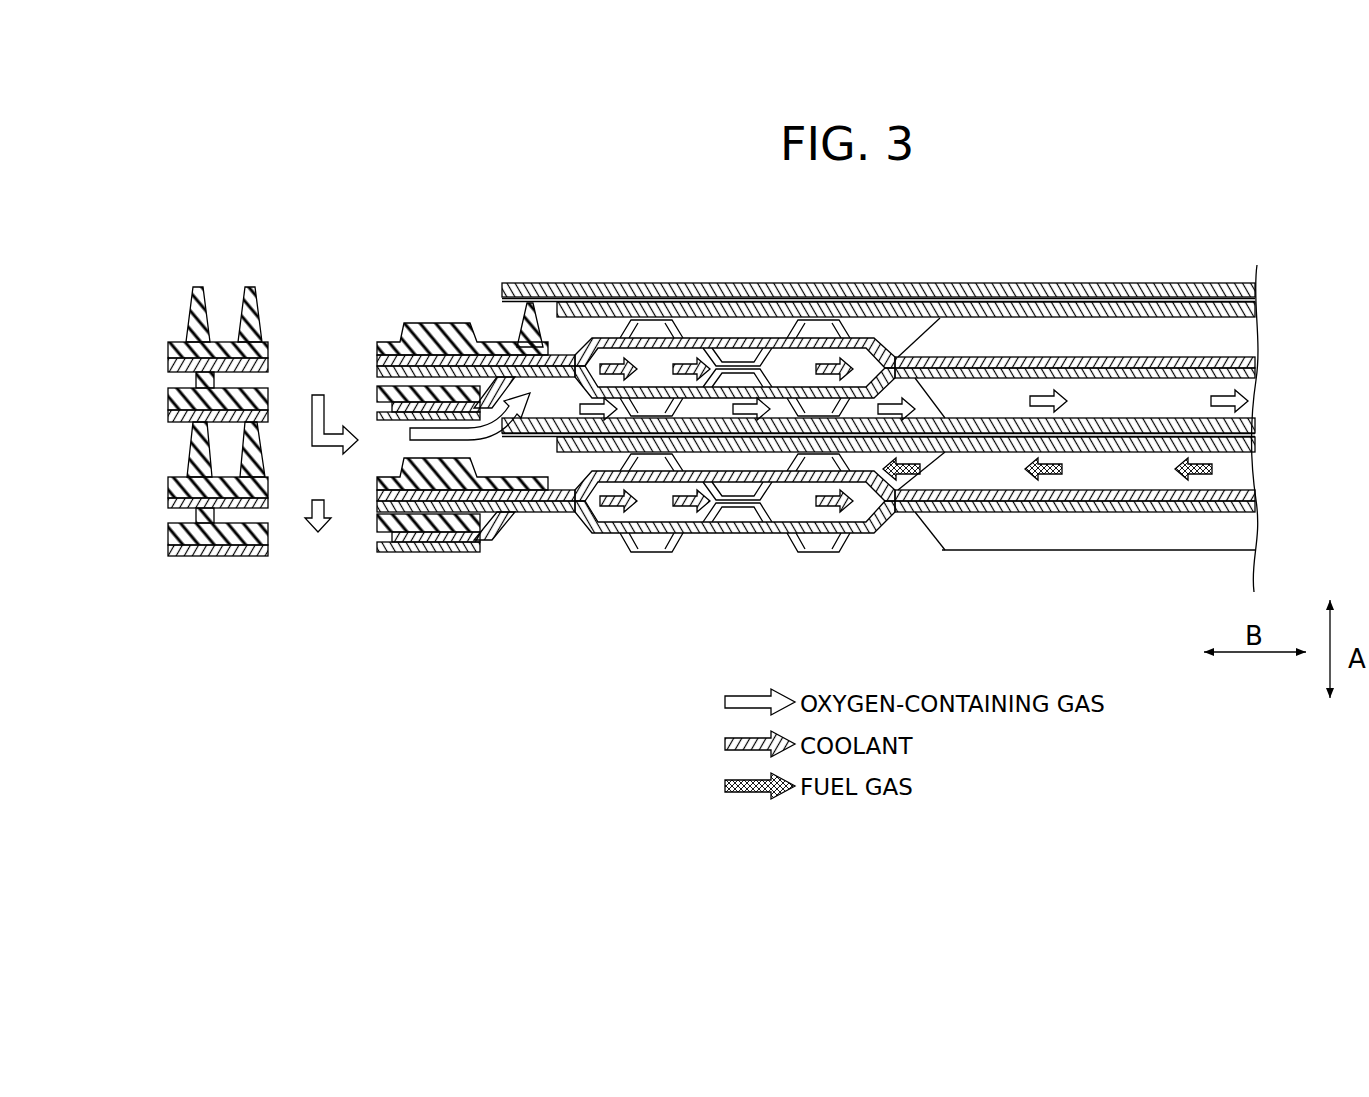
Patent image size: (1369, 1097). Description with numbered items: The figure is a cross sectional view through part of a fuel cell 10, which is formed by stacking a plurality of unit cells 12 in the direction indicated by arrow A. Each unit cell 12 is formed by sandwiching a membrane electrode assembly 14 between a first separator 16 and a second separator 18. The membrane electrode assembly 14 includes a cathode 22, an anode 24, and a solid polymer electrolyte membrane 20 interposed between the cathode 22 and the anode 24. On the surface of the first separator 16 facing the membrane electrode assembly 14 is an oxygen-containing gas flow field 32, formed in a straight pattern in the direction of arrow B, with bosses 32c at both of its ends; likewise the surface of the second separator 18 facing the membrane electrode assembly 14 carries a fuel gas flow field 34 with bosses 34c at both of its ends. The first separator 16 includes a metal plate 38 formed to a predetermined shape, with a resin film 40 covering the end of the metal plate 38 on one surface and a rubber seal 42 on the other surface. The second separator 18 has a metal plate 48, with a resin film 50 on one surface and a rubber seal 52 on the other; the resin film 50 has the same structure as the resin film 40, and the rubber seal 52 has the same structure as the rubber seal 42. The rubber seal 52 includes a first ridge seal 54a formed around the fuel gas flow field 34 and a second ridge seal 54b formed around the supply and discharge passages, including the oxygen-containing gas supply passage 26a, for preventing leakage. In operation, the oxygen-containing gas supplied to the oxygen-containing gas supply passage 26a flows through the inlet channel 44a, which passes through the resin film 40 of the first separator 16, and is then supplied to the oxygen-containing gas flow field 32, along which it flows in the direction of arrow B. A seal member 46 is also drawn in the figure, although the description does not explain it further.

The fuel cell 10 is at (641, 170).
The unit cell 12 is at (860, 234).
The membrane electrode assembly 14 is at (878, 324).
The first separator 16 is at (668, 386).
The second separator 18 is at (782, 468).
The solid polymer electrolyte membrane 20 is at (1168, 434).
The cathode 22 is at (1135, 420).
The anode 24 is at (1202, 448).
The oxygen-containing gas supply passage 26a is at (331, 352).
The oxygen-containing gas flow field 32 is at (997, 395).
The bosses 32c is at (656, 410).
The fuel gas flow field 34 is at (1018, 472).
The bosses 34c is at (655, 465).
The metal plate 38 is at (528, 300).
The resin film 40 is at (168, 420).
The rubber seal 42 is at (168, 392).
The inlet channel 44a is at (452, 425).
The seal member 46 is at (420, 380).
The metal plate 48 is at (572, 518).
The resin film 50 is at (168, 510).
The rubber seal 52 is at (168, 484).
The first ridge seal 54a is at (510, 452).
The second ridge seal 54b is at (256, 455).